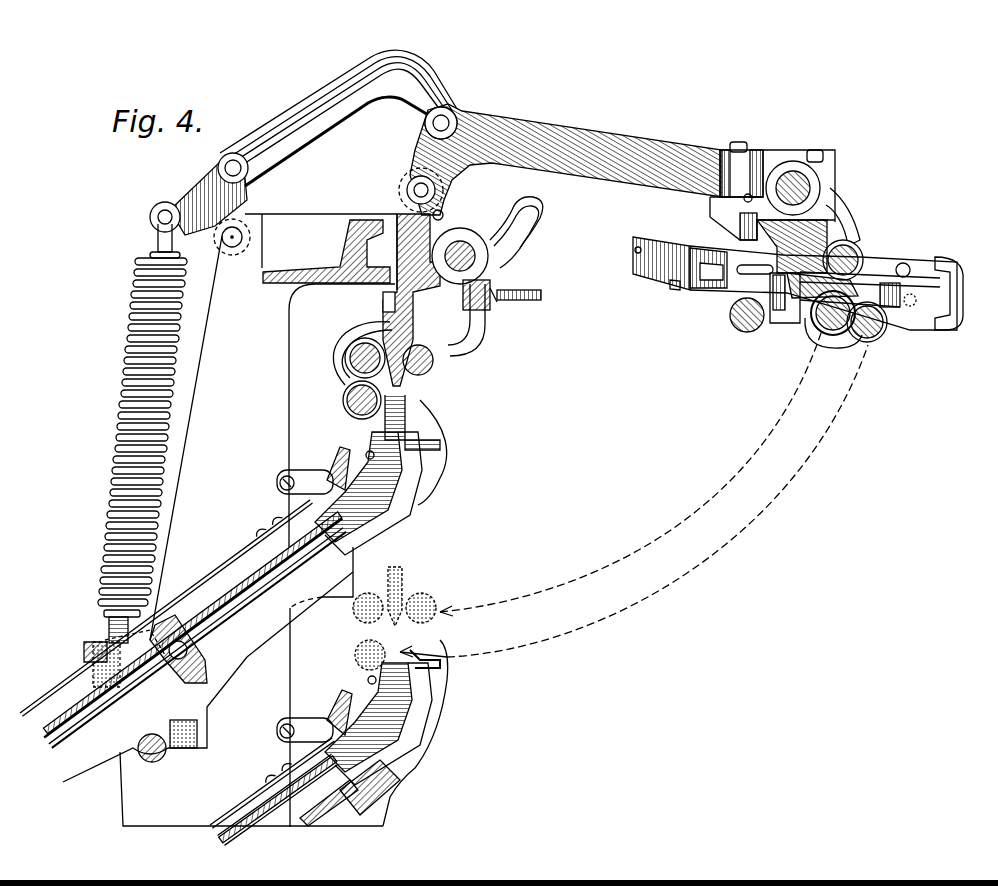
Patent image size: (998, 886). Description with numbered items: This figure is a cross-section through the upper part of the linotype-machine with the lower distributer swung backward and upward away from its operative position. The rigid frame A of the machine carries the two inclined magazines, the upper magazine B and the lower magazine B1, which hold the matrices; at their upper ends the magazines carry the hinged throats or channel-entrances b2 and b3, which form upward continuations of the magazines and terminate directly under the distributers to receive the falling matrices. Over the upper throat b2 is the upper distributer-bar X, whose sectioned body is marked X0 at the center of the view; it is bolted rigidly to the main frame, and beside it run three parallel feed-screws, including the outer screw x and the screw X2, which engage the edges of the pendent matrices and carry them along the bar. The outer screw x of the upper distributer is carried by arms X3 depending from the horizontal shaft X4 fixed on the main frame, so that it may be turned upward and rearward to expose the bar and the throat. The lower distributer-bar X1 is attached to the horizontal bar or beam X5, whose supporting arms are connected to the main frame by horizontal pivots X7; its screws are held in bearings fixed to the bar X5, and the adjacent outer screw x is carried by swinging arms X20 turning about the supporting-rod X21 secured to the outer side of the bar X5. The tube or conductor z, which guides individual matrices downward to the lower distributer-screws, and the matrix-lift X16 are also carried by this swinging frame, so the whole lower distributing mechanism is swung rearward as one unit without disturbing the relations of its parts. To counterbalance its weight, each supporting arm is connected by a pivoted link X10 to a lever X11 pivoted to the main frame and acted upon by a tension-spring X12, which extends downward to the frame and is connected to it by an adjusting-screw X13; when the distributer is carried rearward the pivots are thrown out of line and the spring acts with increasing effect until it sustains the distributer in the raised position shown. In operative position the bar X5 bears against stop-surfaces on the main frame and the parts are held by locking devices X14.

The rigid frame A is at (255, 493).
The upper inclined magazine B is at (183, 599).
The lower inclined magazine B1 is at (279, 767).
The upper distributer-bar X is at (605, 140).
The central member X0 is at (385, 318).
The outer feed-screw x is at (436, 360).
The lower distributer-bar X1 is at (350, 358).
The feed-screw X2 is at (346, 400).
The arms X3 is at (470, 328).
The horizontal shaft X4 is at (465, 248).
The horizontal bar or beam X5 is at (850, 228).
The horizontal pivots X7 is at (407, 190).
The pivoted link X10 is at (282, 112).
The lever X11 is at (190, 182).
The tension-spring X12 is at (122, 332).
The adjusting-screw X13 is at (108, 636).
The locking devices X14 is at (418, 470).
The matrix-lift X16 is at (915, 305).
The swinging arms X20 is at (838, 205).
The supporting-rod X21 is at (790, 172).
The throat or channel-entrance b2 is at (372, 462).
The throat or channel-entrance b3 is at (400, 712).
The tube or conductor z is at (680, 275).